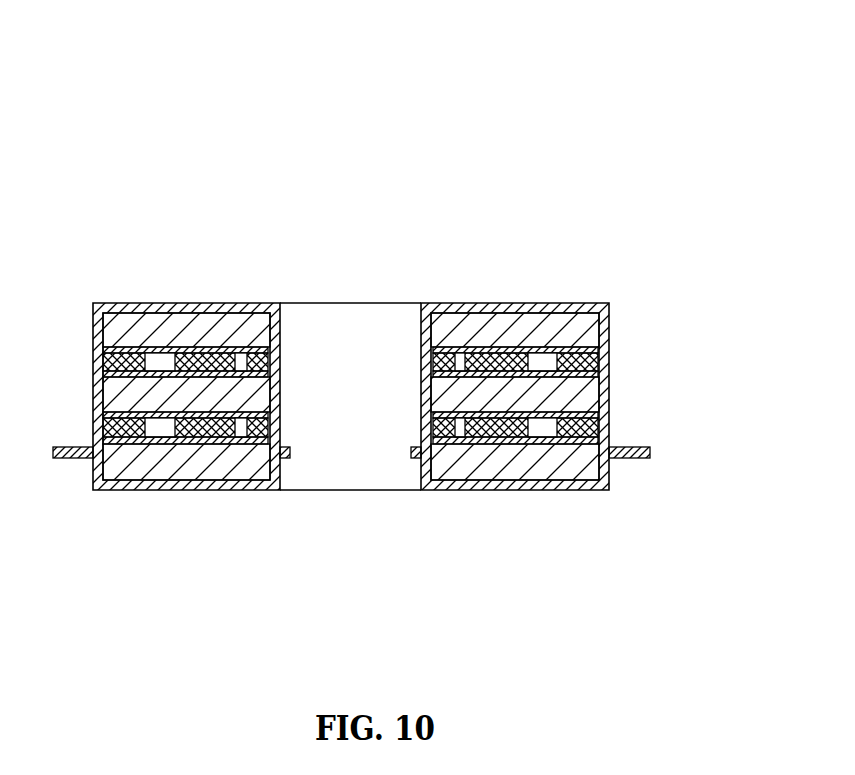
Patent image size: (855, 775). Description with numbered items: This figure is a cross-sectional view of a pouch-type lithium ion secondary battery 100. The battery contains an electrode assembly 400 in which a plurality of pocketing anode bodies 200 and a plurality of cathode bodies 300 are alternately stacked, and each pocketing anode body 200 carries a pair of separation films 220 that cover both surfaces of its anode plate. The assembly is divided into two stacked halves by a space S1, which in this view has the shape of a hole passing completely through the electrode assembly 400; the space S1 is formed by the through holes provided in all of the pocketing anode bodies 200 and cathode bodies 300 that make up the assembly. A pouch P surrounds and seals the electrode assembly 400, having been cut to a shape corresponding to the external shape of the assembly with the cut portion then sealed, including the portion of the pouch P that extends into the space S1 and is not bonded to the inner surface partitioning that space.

The lithium ion secondary battery 100 is at (410, 276).
The pouch P is at (93, 395).
The space S1 is at (367, 333).
The separation film 220 is at (433, 432).
The cathode body 300 is at (606, 384).
The pocketing anode body 200 is at (606, 429).
The electrode assembly 400 is at (610, 405).